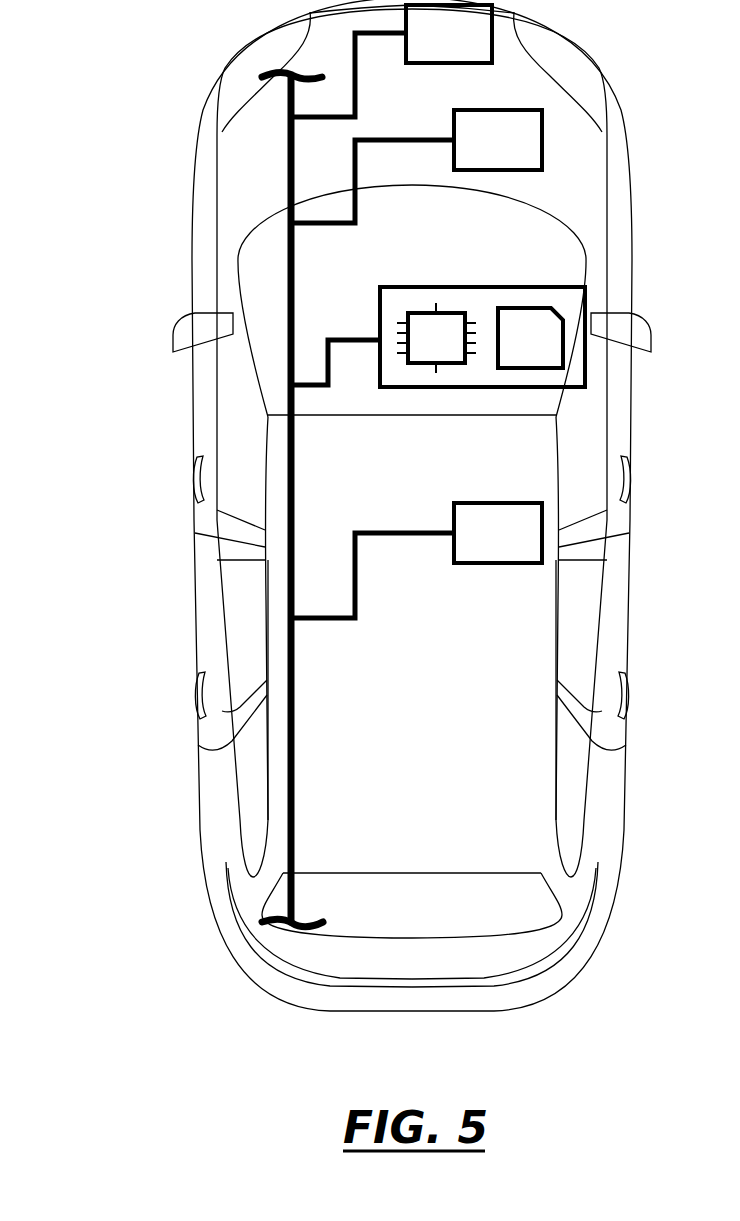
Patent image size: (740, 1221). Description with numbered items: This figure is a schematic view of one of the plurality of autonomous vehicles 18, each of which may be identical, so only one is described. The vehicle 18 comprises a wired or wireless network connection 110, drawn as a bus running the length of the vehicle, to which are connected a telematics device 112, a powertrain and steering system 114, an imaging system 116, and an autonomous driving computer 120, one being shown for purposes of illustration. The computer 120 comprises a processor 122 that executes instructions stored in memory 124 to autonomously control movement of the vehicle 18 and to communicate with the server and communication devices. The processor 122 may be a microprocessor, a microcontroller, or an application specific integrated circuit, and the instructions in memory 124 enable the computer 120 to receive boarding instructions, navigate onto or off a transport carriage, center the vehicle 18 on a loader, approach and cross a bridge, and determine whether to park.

The vehicle 18 is at (137, 440).
The wired or wireless network connection 110 is at (287, 162).
The telematics device 112 is at (490, 549).
The powertrain and steering system 114 is at (490, 156).
The imaging system 116 is at (441, 50).
The autonomous driving computer 120 is at (477, 283).
The processor 122 is at (429, 354).
The memory 124 is at (523, 354).